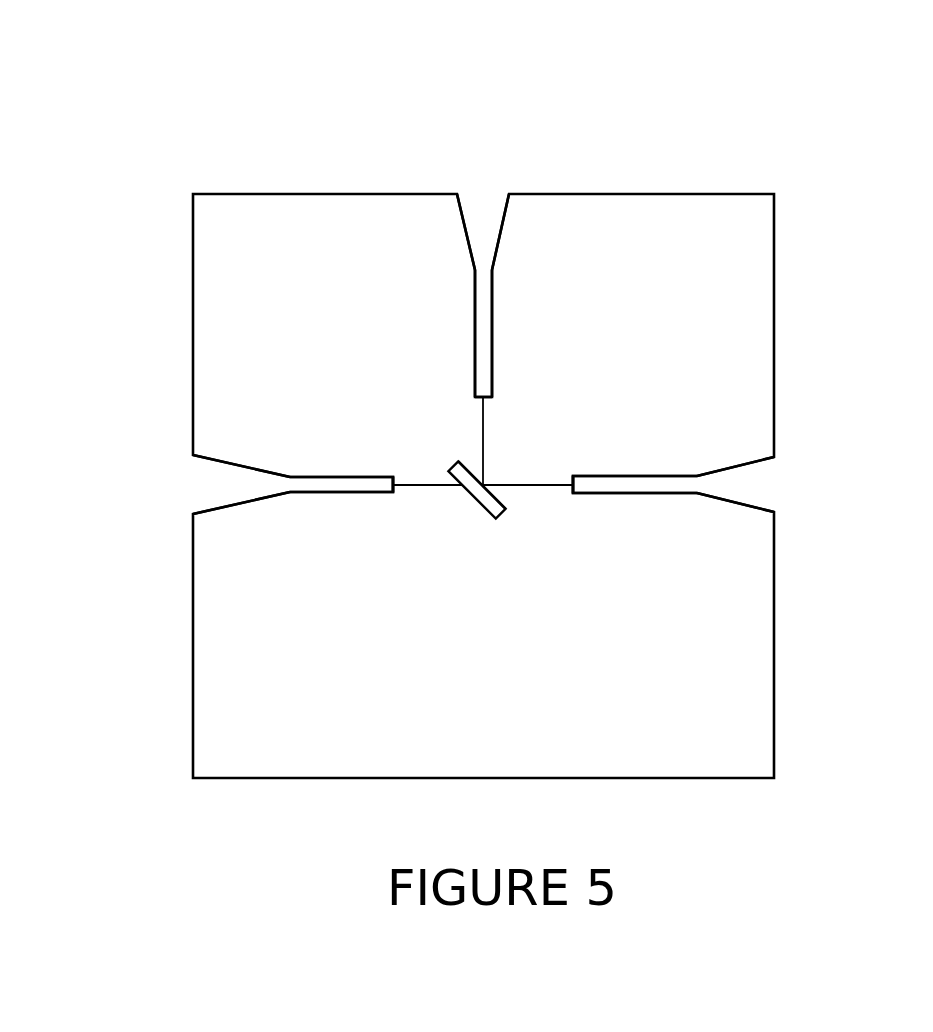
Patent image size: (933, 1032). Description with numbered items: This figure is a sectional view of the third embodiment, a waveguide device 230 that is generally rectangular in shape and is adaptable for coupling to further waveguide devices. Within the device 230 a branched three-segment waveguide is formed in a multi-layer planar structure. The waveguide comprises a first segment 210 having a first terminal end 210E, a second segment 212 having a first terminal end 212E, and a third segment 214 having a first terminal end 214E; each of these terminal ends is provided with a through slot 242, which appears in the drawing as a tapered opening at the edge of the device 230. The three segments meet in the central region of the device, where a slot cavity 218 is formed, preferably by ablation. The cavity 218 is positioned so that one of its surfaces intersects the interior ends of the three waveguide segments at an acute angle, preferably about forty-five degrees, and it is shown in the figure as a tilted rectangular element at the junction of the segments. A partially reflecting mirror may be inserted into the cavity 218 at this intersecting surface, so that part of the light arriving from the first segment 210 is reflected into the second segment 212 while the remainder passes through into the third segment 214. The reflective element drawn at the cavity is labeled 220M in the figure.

The waveguide device 230 is at (713, 148).
The through slot 242 is at (485, 183).
The second segment 212 is at (482, 429).
The first terminal end of second segment 212E is at (485, 401).
The third segment 214 is at (408, 484).
The first terminal end of third segment 214E is at (397, 492).
The first segment 210 is at (517, 483).
The first terminal end of first segment 210E is at (568, 489).
The slot cavity 218 is at (478, 507).
The reflective surface of optical element 220M is at (507, 497).